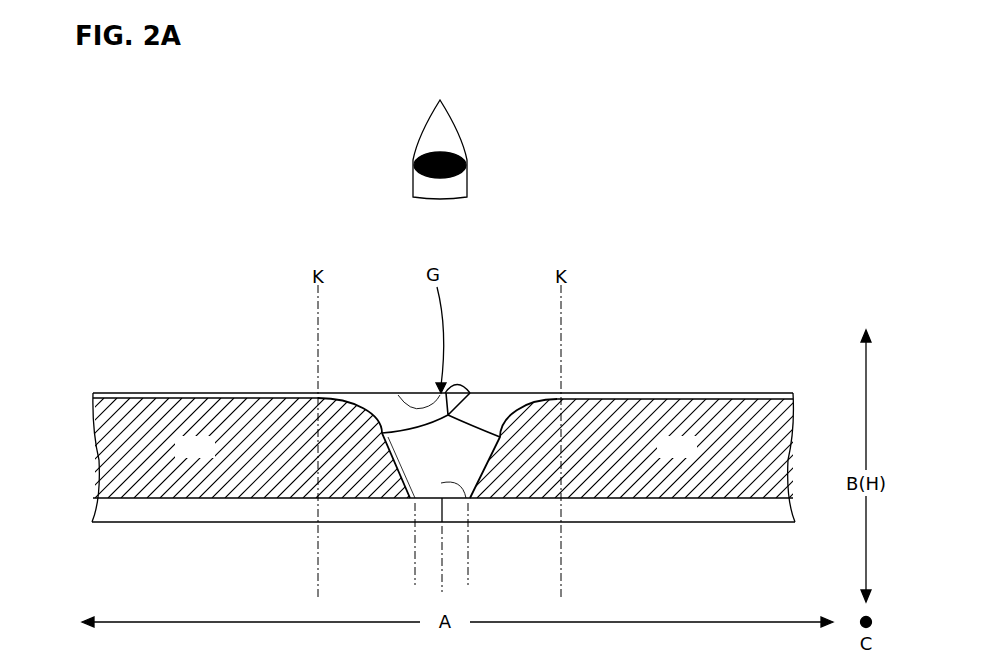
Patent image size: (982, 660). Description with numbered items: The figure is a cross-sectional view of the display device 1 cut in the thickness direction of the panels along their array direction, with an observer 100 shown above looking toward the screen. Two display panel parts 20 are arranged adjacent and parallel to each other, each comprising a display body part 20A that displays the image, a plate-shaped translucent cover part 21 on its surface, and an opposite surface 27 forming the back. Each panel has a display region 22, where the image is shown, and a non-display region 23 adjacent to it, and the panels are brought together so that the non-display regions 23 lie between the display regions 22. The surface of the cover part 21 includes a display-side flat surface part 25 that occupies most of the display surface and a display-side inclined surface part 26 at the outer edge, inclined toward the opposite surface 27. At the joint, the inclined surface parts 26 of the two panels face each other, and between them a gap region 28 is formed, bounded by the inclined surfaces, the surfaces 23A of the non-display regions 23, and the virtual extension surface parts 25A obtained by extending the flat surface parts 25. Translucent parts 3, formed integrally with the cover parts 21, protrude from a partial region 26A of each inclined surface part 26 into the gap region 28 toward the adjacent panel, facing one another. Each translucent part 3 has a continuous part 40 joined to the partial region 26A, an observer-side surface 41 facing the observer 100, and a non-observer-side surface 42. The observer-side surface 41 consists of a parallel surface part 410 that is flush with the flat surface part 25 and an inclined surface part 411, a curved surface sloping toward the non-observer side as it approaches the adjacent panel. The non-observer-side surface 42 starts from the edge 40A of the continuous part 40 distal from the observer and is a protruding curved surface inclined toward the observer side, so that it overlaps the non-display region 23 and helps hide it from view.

The observer 100 is at (413, 168).
The display device 1 is at (667, 296).
The display panel part 20 is at (457, 450).
The display body part 20A is at (178, 457).
The display-side flat surface part 25 is at (146, 393).
The cover part 21 is at (207, 393).
The opposite surface 27 is at (248, 522).
The continuous part 40 is at (356, 400).
The observer-side surface 41 is at (382, 398).
The non-observer-side surface 42 is at (406, 398).
The inclined surface part 411 is at (461, 373).
The parallel surface part 410 is at (470, 392).
The translucent part 3 is at (384, 421).
The gap region 28 is at (432, 455).
The display-side inclined surface part 26 is at (398, 478).
The partial region 26A is at (357, 400).
The virtual extension surface part 25A is at (421, 399).
The edge of continuous part 40A is at (408, 500).
The surface of non-display region 23A is at (466, 500).
The non-display region 23 is at (393, 530).
The display region 22 is at (98, 560).